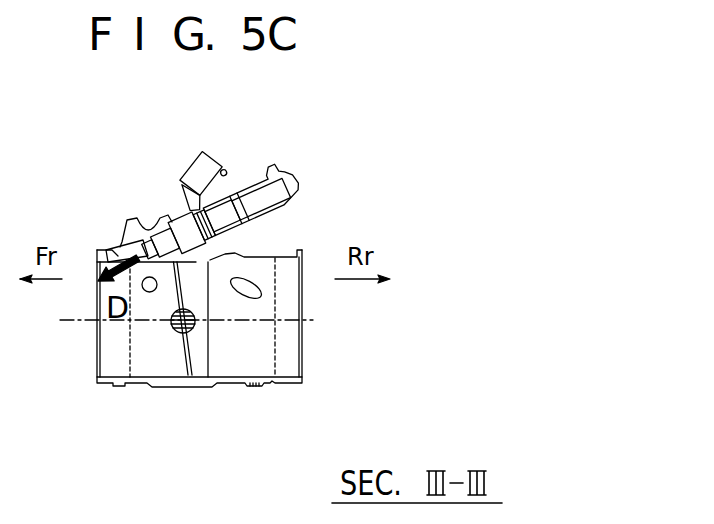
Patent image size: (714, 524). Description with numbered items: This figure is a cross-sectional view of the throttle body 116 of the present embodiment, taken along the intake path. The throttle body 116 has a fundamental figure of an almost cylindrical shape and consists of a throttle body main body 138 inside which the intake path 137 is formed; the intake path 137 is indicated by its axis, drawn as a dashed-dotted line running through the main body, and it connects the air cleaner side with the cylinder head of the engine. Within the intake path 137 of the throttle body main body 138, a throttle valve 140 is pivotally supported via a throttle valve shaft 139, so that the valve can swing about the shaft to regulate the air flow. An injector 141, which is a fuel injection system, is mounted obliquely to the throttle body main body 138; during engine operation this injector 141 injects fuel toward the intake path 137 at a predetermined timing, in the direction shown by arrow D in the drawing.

The throttle body 116 is at (272, 137).
The intake path 137 is at (313, 320).
The throttle body main body 138 is at (263, 260).
The throttle valve shaft 139 is at (172, 328).
The throttle valve 140 is at (193, 372).
The injector 141 is at (178, 221).